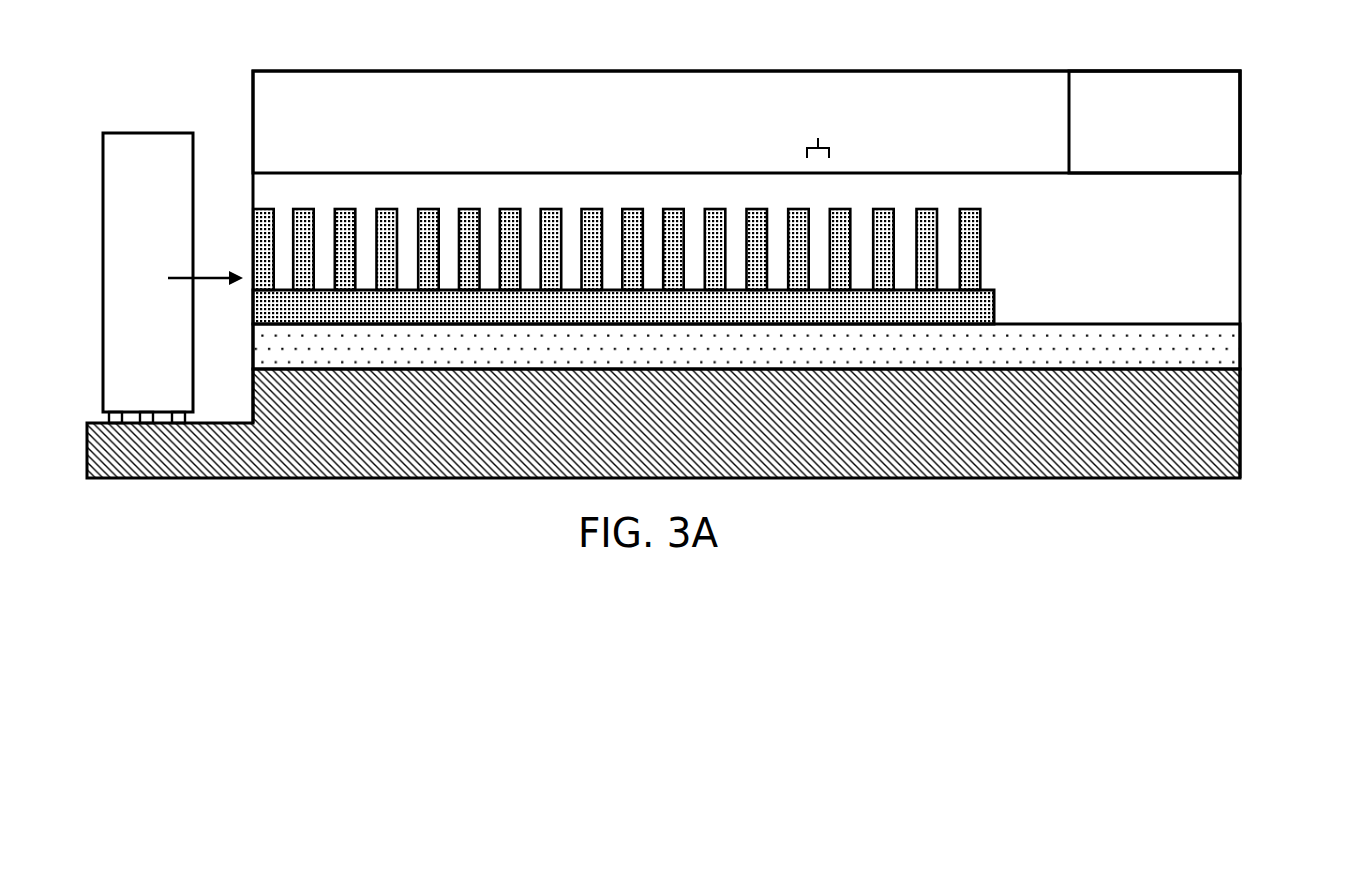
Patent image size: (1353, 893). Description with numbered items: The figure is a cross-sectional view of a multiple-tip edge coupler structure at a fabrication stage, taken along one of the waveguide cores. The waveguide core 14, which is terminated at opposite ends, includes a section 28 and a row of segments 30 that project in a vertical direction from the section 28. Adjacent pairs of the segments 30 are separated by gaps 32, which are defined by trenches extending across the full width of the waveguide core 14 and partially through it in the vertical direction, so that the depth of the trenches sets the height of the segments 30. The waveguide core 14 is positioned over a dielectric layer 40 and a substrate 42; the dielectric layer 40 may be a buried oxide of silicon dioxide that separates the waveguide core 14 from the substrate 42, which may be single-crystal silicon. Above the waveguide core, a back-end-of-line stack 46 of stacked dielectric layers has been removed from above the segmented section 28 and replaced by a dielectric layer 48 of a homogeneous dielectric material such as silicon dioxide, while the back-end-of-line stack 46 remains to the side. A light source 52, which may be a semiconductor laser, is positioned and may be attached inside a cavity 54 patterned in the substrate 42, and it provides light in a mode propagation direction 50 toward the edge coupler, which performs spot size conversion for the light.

The waveguide core 14 is at (970, 184).
The section 28 is at (958, 308).
The segments 30 is at (922, 248).
The gaps 32 is at (819, 134).
The dielectric layer 40 is at (1198, 352).
The substrate 42 is at (1202, 432).
The back-end-of-line stack 46 is at (1188, 98).
The dielectric layer 48 is at (293, 92).
The mode propagation direction 50 is at (214, 277).
The light source 52 is at (133, 198).
The cavity 54 is at (239, 397).